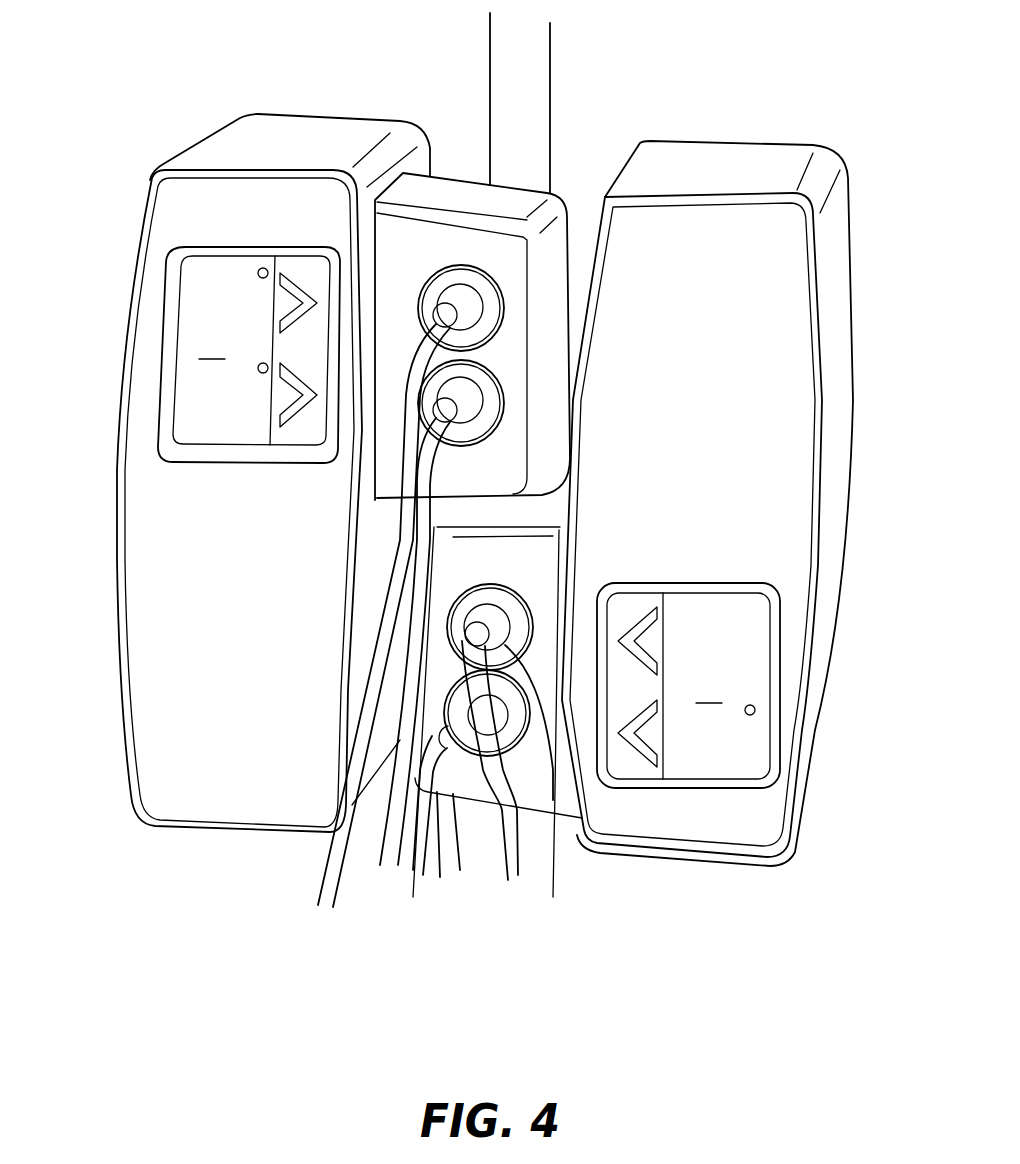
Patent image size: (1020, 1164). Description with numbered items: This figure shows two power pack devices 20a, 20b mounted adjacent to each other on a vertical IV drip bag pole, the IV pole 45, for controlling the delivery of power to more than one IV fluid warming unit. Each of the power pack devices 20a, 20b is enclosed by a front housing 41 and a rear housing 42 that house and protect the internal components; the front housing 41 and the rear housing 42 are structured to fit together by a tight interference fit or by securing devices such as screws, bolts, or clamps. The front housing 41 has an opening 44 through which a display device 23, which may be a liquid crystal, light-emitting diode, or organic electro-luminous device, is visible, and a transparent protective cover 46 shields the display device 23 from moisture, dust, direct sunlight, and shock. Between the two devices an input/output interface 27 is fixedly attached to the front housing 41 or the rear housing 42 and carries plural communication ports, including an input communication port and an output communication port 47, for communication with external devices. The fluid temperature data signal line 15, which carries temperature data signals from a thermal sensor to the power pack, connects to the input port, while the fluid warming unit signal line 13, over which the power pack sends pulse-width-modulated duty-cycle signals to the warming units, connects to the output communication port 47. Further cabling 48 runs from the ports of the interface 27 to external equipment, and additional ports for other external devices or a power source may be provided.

The power pack device 20a is at (167, 845).
The power pack device 20b is at (773, 875).
The front housing 41 is at (195, 197).
The rear housing 42 is at (243, 140).
The opening 44 is at (163, 410).
The display device 23 is at (196, 353).
The protective cover 46 is at (460, 518).
The input/output interface 27 is at (500, 200).
The IV pole 45 is at (513, 63).
The cable connector 48 is at (447, 295).
The data signal line 15 is at (328, 888).
The output communication port 47 is at (420, 805).
The signal line 13 is at (443, 833).